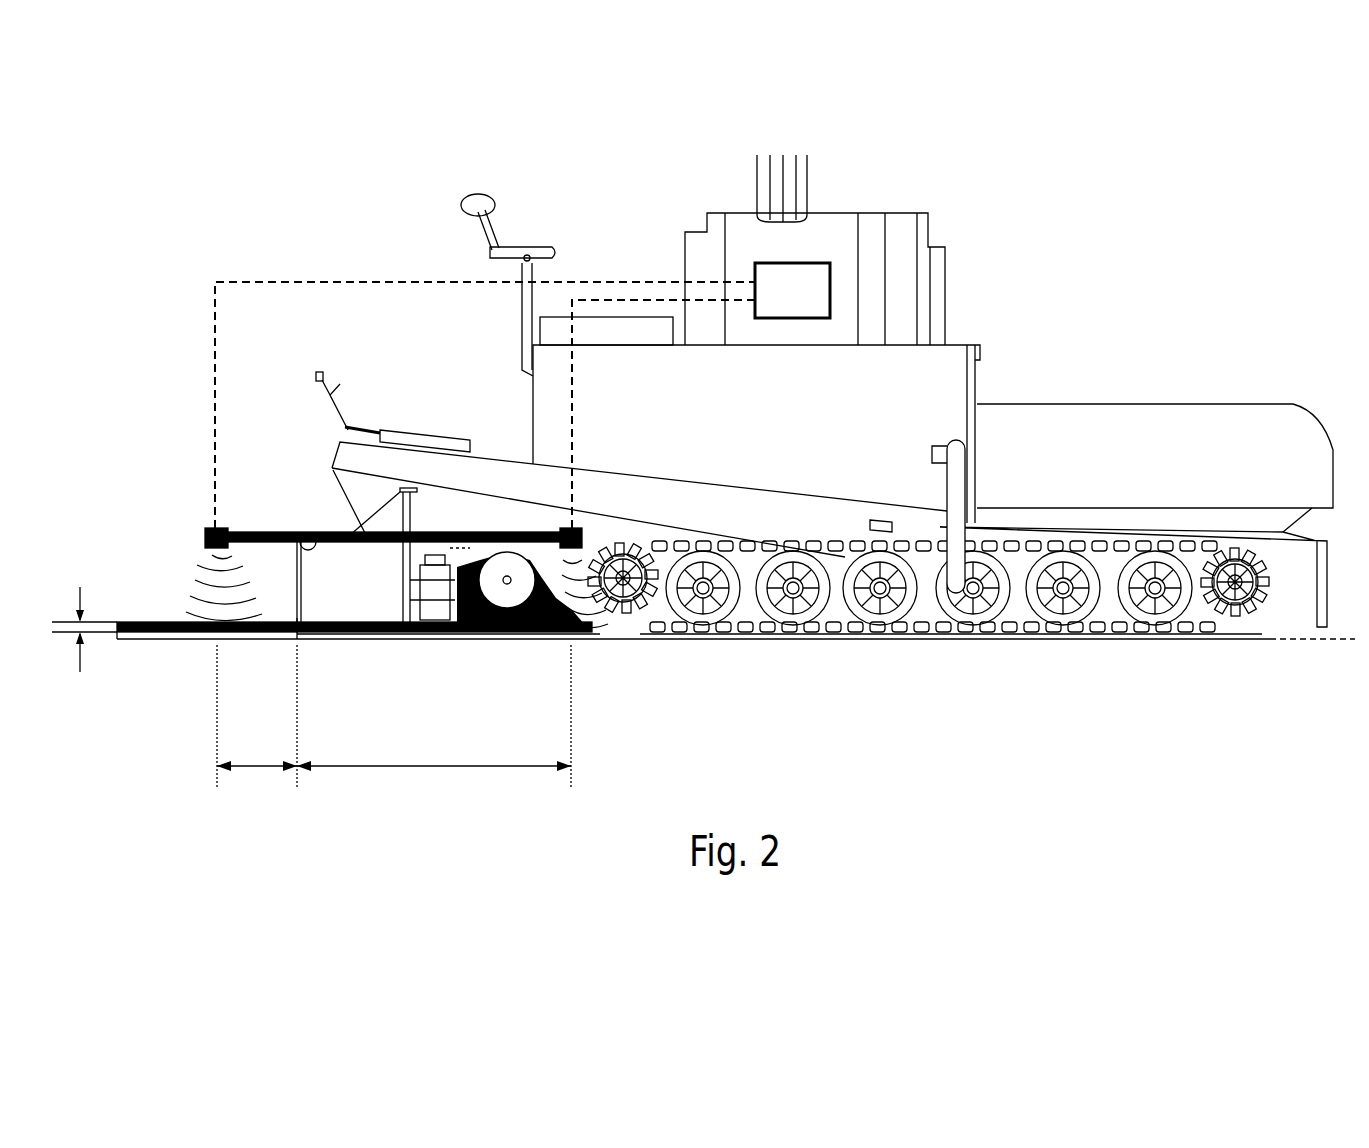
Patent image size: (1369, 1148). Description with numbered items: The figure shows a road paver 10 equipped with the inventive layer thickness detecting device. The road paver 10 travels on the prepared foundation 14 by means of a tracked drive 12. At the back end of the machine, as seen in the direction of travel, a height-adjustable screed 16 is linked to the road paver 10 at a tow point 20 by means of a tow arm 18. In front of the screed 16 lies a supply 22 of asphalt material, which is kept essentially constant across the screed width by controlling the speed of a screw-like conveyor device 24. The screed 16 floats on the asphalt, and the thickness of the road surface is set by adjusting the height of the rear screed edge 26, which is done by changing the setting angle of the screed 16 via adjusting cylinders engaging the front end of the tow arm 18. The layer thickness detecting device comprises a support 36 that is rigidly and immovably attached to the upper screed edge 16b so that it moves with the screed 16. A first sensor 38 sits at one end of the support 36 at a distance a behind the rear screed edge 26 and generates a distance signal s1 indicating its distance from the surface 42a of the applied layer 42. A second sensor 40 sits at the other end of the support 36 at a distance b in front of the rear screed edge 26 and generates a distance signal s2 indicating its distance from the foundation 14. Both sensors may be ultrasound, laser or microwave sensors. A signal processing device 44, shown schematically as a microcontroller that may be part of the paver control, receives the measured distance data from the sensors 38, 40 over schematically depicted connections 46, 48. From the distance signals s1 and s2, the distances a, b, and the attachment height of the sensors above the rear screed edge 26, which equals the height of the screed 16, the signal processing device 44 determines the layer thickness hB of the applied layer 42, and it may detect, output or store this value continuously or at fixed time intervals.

The road paver 10 is at (990, 310).
The tracked drive 12 is at (1250, 618).
The foundation 14 is at (1310, 641).
The screed 16 is at (350, 600).
The upper screed edge 16b is at (300, 532).
The tow arm 18 is at (736, 510).
The tow point 20 is at (972, 560).
The supply of asphalt material 22 is at (512, 634).
The screw-like conveyor device 24 is at (522, 567).
The rear screed edge 26 is at (290, 638).
The support 36 is at (238, 532).
The first sensor 38 is at (210, 528).
The second sensor 40 is at (580, 528).
The applied layer 42 is at (160, 620).
The surface of the applied layer 42a is at (125, 613).
The signal processing device 44 is at (812, 263).
The connection 46 is at (630, 300).
The connection 48 is at (388, 282).
The distance signal s1 is at (200, 556).
The distance signal s2 is at (582, 626).
The layer thickness hB is at (65, 629).
The distance a is at (257, 716).
The distance b is at (434, 716).